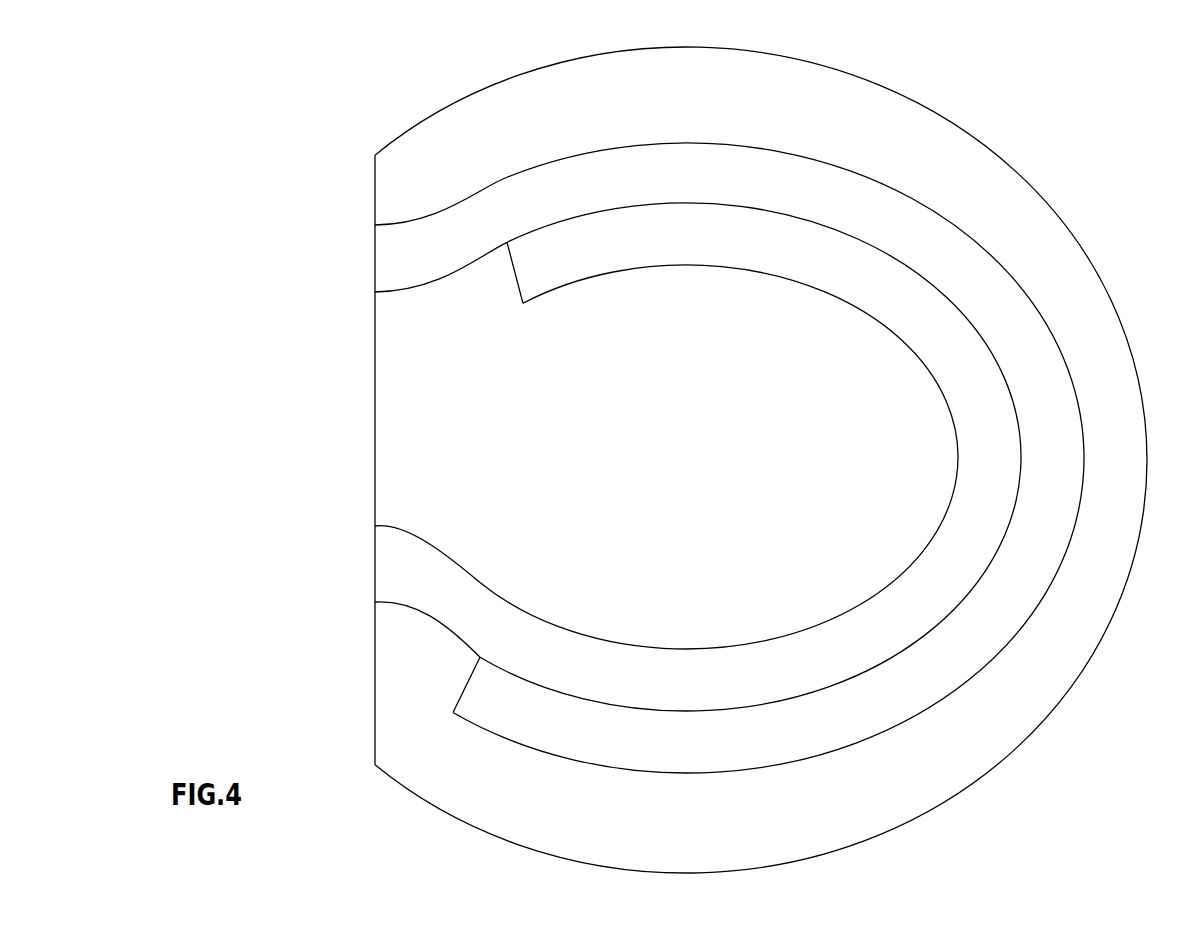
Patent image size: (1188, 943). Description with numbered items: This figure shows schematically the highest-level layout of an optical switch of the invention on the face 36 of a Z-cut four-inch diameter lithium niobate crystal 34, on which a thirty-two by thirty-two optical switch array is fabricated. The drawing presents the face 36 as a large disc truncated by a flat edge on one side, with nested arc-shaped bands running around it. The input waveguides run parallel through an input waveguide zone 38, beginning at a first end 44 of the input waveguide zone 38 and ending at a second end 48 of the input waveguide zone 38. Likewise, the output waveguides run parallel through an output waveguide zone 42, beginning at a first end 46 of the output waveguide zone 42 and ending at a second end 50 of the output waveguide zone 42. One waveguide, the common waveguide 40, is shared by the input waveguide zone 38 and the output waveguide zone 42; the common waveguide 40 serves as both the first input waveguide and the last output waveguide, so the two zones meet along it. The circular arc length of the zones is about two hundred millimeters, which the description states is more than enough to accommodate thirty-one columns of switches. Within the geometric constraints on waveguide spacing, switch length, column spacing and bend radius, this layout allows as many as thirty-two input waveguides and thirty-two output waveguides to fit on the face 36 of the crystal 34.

The lithium niobate crystal 34 is at (972, 134).
The face 36 is at (729, 111).
The input waveguide zone 38 is at (987, 425).
The common waveguide 40 is at (429, 292).
The output waveguide zone 42 is at (1040, 310).
The first end of input waveguide zone 44 is at (375, 571).
The first end of output waveguide zone 46 is at (463, 687).
The second end of input waveguide zone 48 is at (515, 300).
The second end of output waveguide zone 50 is at (375, 262).